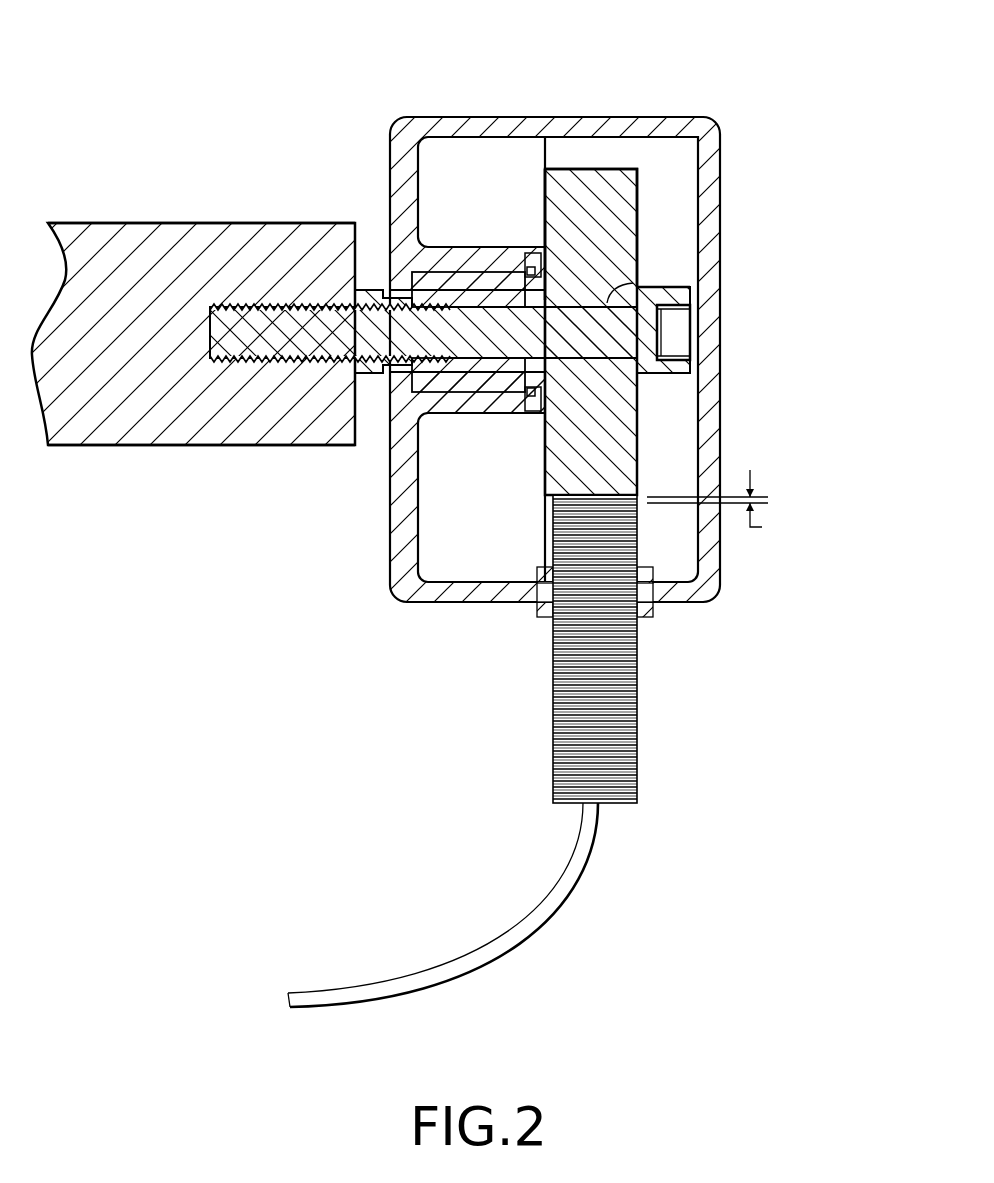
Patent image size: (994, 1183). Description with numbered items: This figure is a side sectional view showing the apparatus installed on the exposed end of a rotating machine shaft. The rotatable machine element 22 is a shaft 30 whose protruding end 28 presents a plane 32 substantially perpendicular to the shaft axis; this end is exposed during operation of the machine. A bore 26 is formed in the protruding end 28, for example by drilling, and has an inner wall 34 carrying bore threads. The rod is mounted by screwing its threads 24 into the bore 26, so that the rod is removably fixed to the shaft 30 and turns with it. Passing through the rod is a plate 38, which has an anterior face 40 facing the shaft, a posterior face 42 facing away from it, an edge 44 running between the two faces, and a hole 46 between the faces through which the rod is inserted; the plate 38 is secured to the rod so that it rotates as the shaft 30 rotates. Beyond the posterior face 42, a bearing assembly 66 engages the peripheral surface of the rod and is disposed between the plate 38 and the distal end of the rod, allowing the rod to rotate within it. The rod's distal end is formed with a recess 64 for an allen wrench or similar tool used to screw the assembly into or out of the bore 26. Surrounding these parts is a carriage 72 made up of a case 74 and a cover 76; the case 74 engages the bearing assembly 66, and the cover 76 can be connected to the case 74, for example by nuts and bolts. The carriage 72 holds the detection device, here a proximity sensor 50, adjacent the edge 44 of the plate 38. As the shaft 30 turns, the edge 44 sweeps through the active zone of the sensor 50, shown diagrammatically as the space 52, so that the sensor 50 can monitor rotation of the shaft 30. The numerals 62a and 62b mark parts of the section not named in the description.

The rotatable machine element 22 is at (220, 223).
The threads 24 is at (446, 336).
The bore 26 is at (243, 357).
The protruding end 28 is at (110, 447).
The shaft 30 is at (88, 223).
The plane 32 is at (366, 245).
The inner wall 34 is at (318, 356).
The plate 38 is at (623, 247).
The anterior face 40 is at (545, 197).
The posterior face 42 is at (637, 273).
The edge 44 is at (623, 181).
The hole 46 is at (637, 285).
The sensor 50 is at (637, 683).
The space 52 is at (721, 508).
The upper nut/washer 62a is at (527, 275).
The lower nut/washer 62b is at (520, 393).
The recess 64 is at (680, 337).
The bearing assembly 66 is at (430, 385).
The carriage 72 is at (768, 64).
The case 74 is at (462, 117).
The cover 76 is at (720, 177).